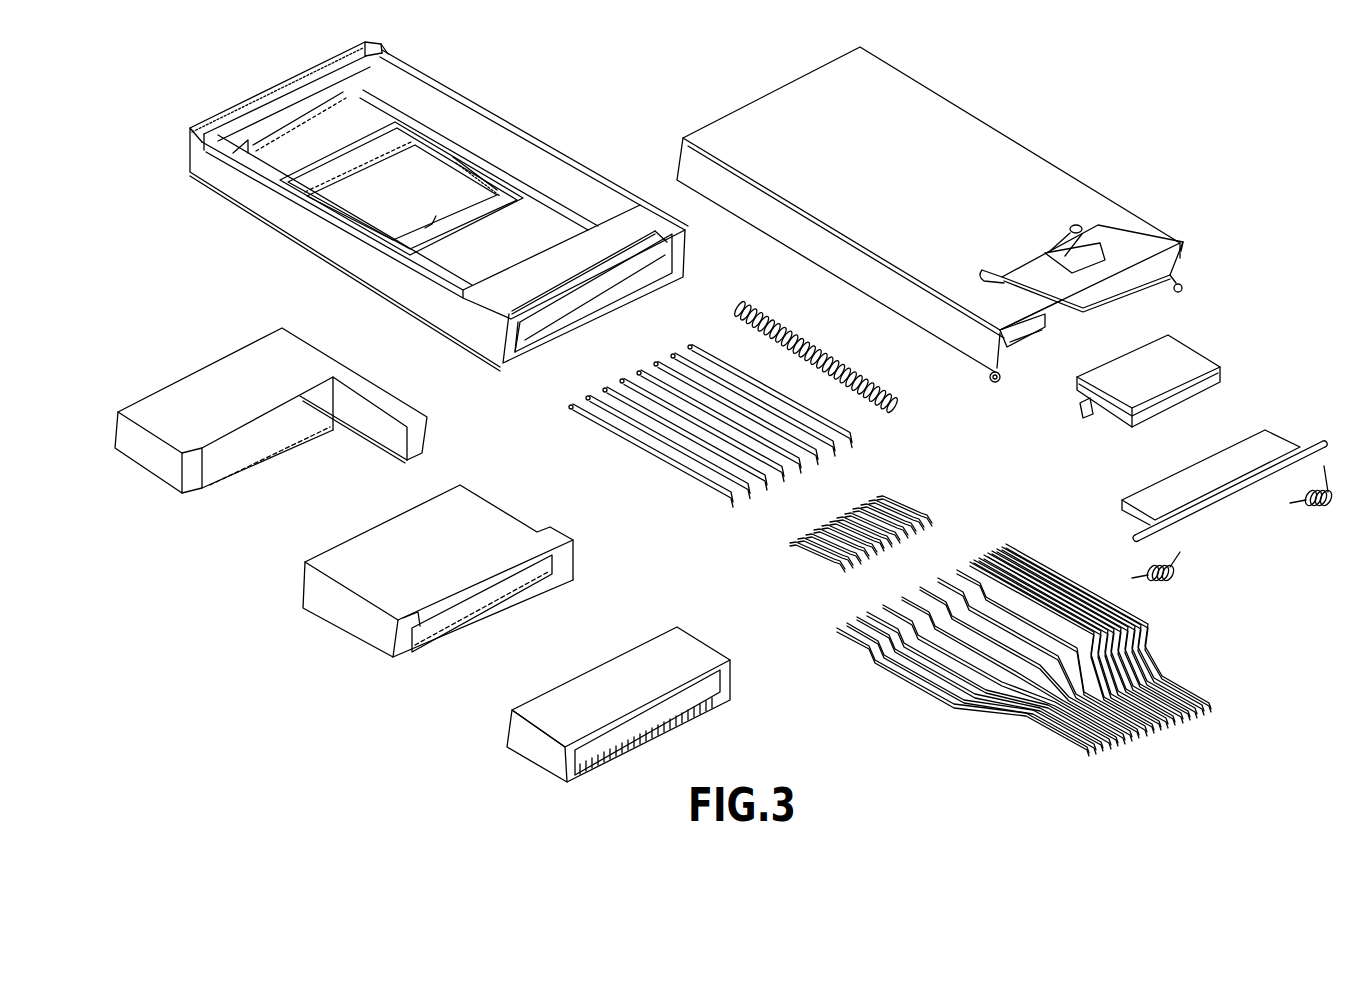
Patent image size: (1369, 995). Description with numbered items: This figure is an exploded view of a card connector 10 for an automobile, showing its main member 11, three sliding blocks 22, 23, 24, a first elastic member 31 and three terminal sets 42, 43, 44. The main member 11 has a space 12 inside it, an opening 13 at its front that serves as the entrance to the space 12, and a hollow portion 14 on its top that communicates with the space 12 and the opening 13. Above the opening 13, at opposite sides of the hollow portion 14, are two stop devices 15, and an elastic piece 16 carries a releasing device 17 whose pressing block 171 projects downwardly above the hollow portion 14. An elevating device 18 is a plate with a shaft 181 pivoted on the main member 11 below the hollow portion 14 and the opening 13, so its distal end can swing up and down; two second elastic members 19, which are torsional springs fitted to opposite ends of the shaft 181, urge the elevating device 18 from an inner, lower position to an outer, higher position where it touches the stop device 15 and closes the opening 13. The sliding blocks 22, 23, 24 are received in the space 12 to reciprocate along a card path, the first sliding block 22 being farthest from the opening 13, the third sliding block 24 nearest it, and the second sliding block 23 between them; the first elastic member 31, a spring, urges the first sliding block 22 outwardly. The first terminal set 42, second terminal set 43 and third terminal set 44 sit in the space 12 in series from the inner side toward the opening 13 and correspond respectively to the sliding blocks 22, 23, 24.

The card connector 10 is at (250, 268).
The main member 11 is at (630, 197).
The space 12 is at (462, 260).
The opening 13 is at (1017, 365).
The hollow portion 14 is at (1030, 293).
The stop device 15 is at (1040, 338).
The elastic piece 16 is at (1128, 250).
The releasing device 17 is at (1162, 394).
The pressing block 171 is at (1093, 418).
The elevating device 18 is at (1224, 470).
The shaft 181 is at (1322, 441).
The second elastic member 19 is at (1330, 517).
The first sliding block 22 is at (138, 467).
The second sliding block 23 is at (330, 623).
The third sliding block 24 is at (530, 767).
The first elastic member 31 is at (809, 343).
The first terminal set 42 is at (813, 547).
The second terminal set 43 is at (705, 487).
The third terminal set 44 is at (1090, 747).